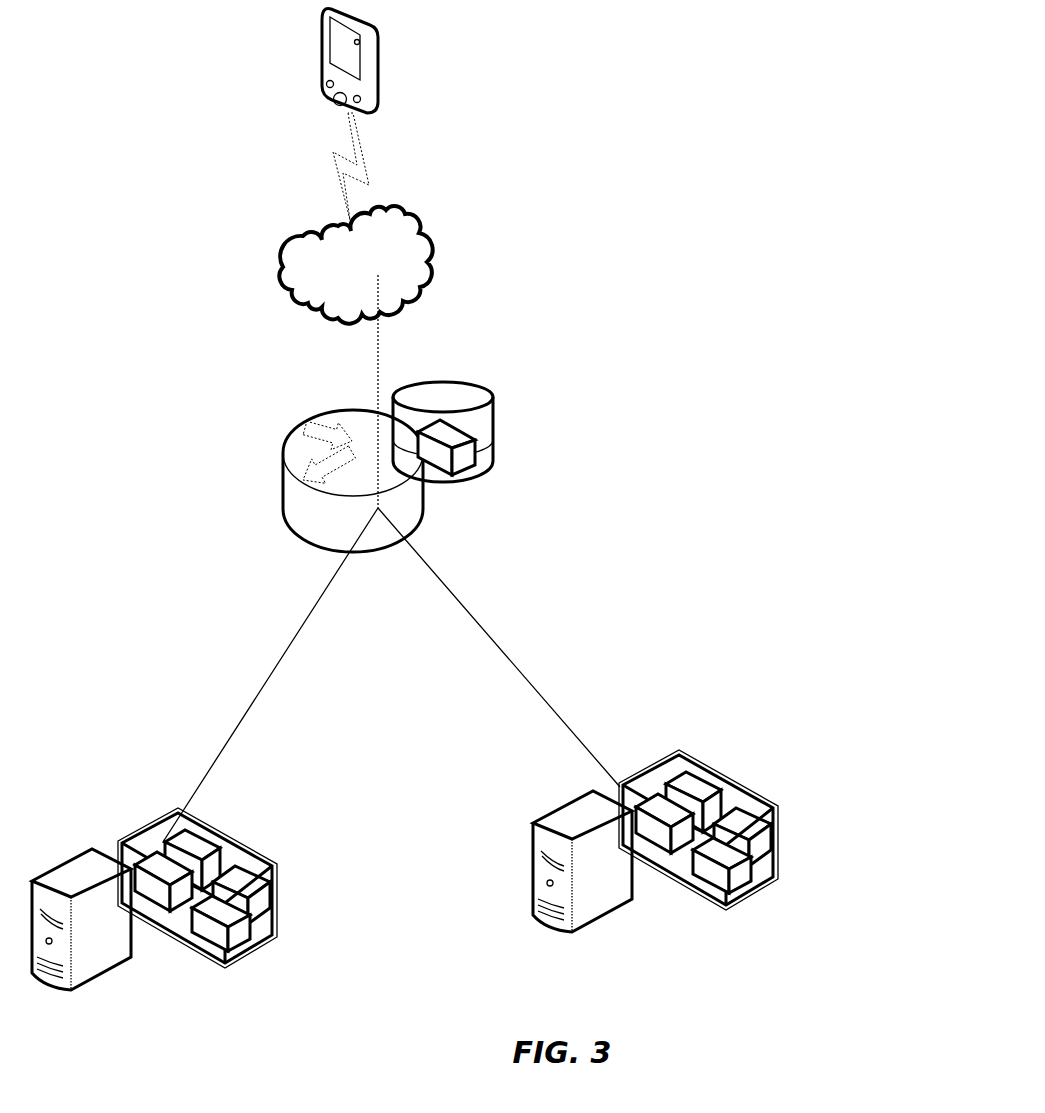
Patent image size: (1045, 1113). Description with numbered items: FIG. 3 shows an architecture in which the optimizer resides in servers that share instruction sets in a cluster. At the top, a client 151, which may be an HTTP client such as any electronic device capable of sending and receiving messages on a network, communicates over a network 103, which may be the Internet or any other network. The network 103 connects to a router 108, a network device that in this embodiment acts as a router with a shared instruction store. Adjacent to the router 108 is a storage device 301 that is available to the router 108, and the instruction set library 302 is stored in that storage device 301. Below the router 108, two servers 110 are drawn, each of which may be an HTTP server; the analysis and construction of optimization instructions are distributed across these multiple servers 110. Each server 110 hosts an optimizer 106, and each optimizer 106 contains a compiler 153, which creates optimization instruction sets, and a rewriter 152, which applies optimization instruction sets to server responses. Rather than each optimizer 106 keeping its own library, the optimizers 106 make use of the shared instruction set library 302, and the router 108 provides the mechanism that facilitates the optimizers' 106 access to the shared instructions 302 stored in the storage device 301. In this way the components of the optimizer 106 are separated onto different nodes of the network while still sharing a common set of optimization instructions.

The client 151 is at (387, 72).
The network 103 is at (427, 250).
The router 108 is at (290, 442).
The storage device 301 is at (487, 397).
The instruction set library 302 is at (213, 864).
The rewriter 152 is at (135, 853).
The optimizer 106 is at (280, 917).
The compiler 153 is at (242, 926).
The server 110 is at (100, 943).